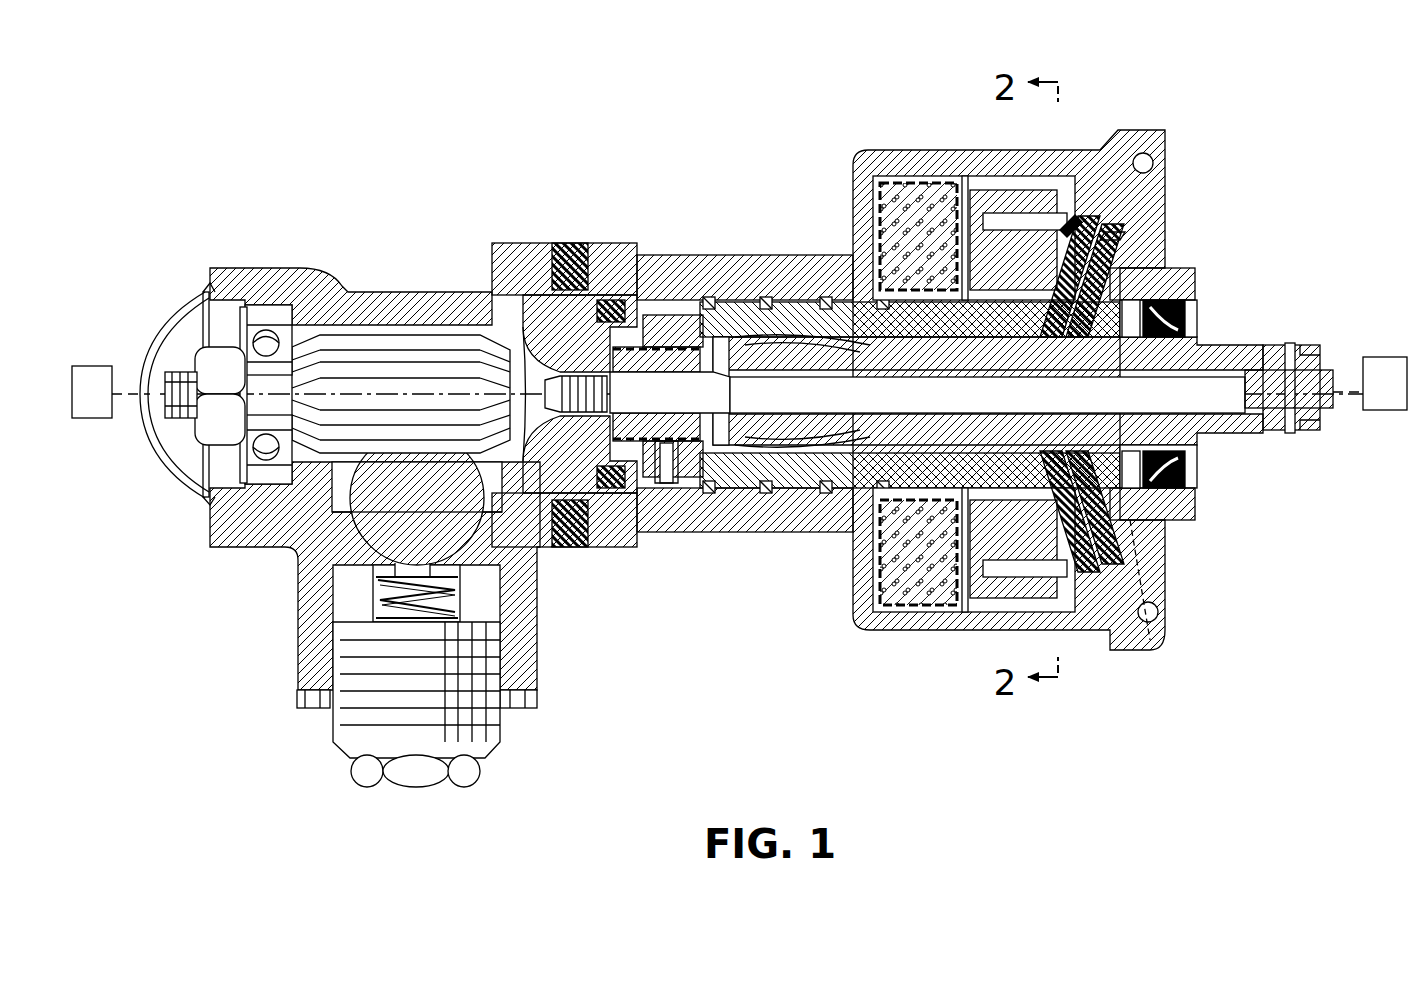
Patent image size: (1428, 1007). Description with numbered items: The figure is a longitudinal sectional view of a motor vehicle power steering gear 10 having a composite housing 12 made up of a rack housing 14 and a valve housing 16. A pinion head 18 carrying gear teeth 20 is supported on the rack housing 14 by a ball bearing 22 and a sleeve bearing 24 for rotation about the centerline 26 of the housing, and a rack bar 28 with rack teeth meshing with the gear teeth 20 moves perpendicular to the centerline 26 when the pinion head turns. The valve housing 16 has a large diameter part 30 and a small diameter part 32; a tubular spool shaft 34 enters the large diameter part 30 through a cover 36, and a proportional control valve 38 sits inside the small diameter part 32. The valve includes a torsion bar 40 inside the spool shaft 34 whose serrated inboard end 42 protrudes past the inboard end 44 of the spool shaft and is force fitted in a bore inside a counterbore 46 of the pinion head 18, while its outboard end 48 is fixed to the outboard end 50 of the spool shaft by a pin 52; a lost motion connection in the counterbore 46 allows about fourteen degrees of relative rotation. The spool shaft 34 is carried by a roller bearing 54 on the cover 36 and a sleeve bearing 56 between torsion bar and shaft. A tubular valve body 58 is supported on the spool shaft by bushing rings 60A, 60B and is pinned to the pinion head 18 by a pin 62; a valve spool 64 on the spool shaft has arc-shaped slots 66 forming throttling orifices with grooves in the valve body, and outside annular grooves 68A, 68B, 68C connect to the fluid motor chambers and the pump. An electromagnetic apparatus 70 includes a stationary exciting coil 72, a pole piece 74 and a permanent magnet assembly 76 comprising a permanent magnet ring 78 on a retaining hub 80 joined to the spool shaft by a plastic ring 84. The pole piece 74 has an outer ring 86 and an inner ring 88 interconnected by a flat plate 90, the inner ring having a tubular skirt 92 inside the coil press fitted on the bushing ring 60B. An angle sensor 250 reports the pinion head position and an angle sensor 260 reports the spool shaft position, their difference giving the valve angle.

The power steering gear 10 is at (630, 183).
The composite housing 12 is at (566, 245).
The rack housing 14 is at (268, 262).
The valve housing 16 is at (805, 254).
The pinion head 18 is at (392, 338).
The gear teeth 20 is at (350, 345).
The ball bearing 22 is at (266, 457).
The sleeve bearing 24 is at (532, 290).
The centerline 26 is at (1210, 350).
The rack bar 28 is at (385, 530).
The large diameter part 30 is at (905, 150).
The small diameter part 32 is at (680, 254).
The spool shaft 34 is at (1270, 348).
The cover 36 is at (1185, 495).
The proportional control valve 38 is at (862, 484).
The torsion bar 40 is at (1235, 372).
The serrated inboard end 42 is at (578, 412).
The inboard end of spool shaft 44 is at (612, 455).
The counterbore 46 is at (597, 298).
The outboard end of torsion bar 48 is at (1198, 404).
The outboard end of spool shaft 50 is at (1318, 345).
The pin 52 is at (1290, 433).
The roller bearing 54 is at (1132, 480).
The sleeve bearing 56 is at (647, 298).
The valve body 58 is at (666, 486).
The bushing ring 60A is at (714, 297).
The bushing ring 60B is at (850, 300).
The pin 62 is at (658, 478).
The valve spool 64 is at (720, 450).
The arc-shaped slots 66 is at (783, 345).
The outside annular groove 68A is at (708, 494).
The outside annular groove 68B is at (765, 494).
The outside annular groove 68C is at (825, 494).
The electromagnetic apparatus 70 is at (1115, 236).
The exciting coil 72 is at (897, 560).
The pole piece 74 is at (1010, 592).
The permanent magnet assembly 76 is at (1078, 232).
The permanent magnet ring 78 is at (1045, 222).
The retaining hub 80 is at (1072, 272).
The plastic ring 84 is at (1165, 316).
The outer ring 86 is at (1040, 585).
The inner ring 88 is at (1005, 226).
The flat plate 90 is at (975, 178).
The tubular skirt 92 is at (990, 406).
The angle sensor 250 is at (90, 420).
The angle sensor 260 is at (1380, 412).